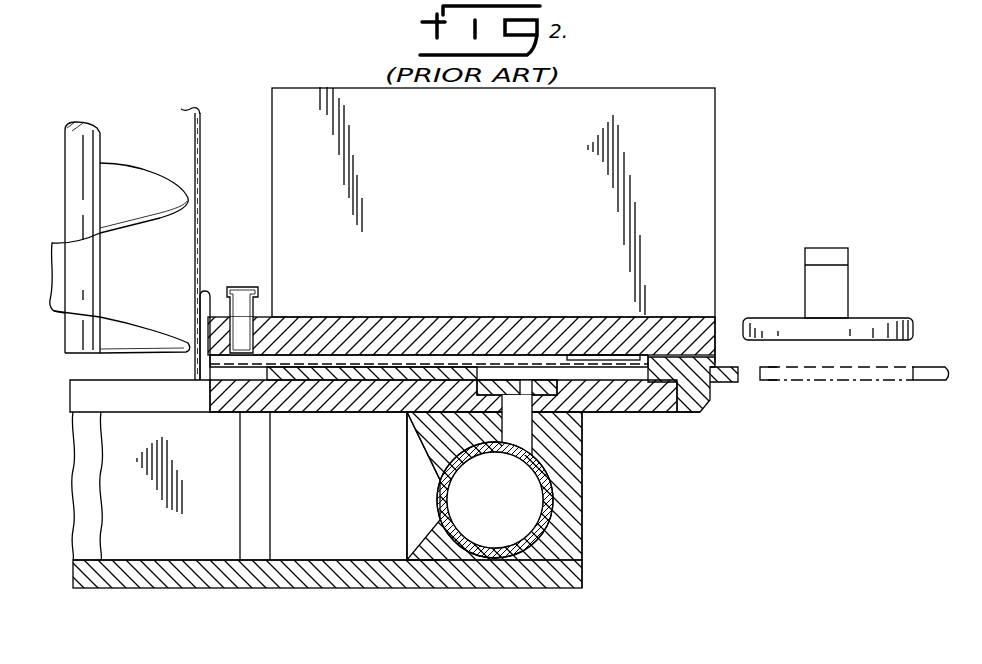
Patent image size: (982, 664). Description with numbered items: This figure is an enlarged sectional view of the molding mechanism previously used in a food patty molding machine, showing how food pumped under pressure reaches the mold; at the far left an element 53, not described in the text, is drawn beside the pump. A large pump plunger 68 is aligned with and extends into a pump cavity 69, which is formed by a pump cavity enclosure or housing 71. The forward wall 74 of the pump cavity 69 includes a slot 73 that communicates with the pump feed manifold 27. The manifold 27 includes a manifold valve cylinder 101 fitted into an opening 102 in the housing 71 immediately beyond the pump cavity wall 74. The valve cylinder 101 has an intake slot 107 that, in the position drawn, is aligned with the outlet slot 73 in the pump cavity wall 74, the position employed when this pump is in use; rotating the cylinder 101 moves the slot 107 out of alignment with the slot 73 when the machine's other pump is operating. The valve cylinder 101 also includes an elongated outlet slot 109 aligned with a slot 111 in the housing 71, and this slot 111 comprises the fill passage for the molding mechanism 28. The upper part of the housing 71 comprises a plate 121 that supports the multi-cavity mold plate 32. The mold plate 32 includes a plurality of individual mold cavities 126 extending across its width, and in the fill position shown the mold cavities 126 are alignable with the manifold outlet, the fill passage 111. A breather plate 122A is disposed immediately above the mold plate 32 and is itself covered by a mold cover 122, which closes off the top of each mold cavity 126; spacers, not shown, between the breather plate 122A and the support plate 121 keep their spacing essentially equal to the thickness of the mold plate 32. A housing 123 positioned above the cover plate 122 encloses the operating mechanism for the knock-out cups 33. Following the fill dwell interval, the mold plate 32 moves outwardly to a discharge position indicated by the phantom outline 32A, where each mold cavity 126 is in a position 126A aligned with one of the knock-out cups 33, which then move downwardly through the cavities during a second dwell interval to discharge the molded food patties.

The valve manifold 27 is at (424, 595).
The molding mechanism 28 is at (738, 314).
The mold plate 32 is at (733, 382).
The phantom outline of discharge position 32A is at (932, 382).
The knock-out cups 33 is at (902, 298).
The screw conveyor 53 is at (153, 337).
The pump plunger 68 is at (182, 542).
The pump cavity 69 is at (305, 545).
The pump cavity housing 71 is at (583, 572).
The slot 73 is at (414, 480).
The forward wall 74 is at (416, 430).
The manifold valve cylinder 101 is at (549, 522).
The opening 102 is at (503, 562).
The intake slot 107 is at (441, 504).
The outlet slot 109 is at (523, 456).
The fill passage slot 111 is at (530, 434).
The support plate 121 is at (641, 372).
The mold cover 122 is at (590, 292).
The breather plate 122A is at (386, 360).
The housing 123 is at (717, 161).
The mold cavities 126 is at (647, 372).
The mold cavity discharge position 126A is at (913, 372).